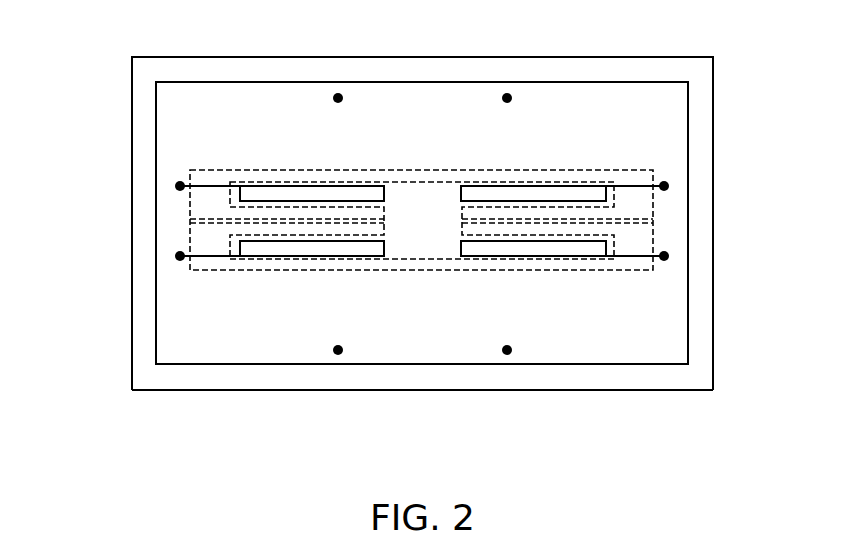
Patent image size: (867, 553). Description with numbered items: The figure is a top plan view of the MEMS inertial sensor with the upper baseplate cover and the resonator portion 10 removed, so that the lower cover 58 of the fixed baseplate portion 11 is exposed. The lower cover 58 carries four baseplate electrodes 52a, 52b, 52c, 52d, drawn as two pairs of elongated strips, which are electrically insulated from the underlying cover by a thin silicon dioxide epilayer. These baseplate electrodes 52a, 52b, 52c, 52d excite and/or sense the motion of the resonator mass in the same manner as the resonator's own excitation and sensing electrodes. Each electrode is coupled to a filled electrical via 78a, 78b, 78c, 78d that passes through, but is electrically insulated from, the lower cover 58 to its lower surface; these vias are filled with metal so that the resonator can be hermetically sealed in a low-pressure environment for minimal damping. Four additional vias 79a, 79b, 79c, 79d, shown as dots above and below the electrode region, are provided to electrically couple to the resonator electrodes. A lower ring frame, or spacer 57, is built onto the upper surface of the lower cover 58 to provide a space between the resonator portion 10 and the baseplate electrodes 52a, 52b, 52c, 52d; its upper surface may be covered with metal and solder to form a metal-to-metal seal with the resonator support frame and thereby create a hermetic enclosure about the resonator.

The resonator portion 10 is at (651, 170).
The baseplate portion 11 is at (132, 103).
The baseplate electrode 52a is at (273, 193).
The baseplate electrode 52b is at (588, 193).
The baseplate electrode 52c is at (290, 248).
The baseplate electrode 52d is at (562, 248).
The lower ring frame spacer 57 is at (648, 379).
The lower cover 58 is at (423, 350).
The electrical via 78a is at (176, 186).
The electrical via 78b is at (668, 186).
The electrical via 78c is at (176, 256).
The electrical via 78d is at (668, 256).
The additional via 79a is at (338, 94).
The additional via 79b is at (507, 94).
The additional via 79c is at (339, 355).
The additional via 79d is at (508, 355).